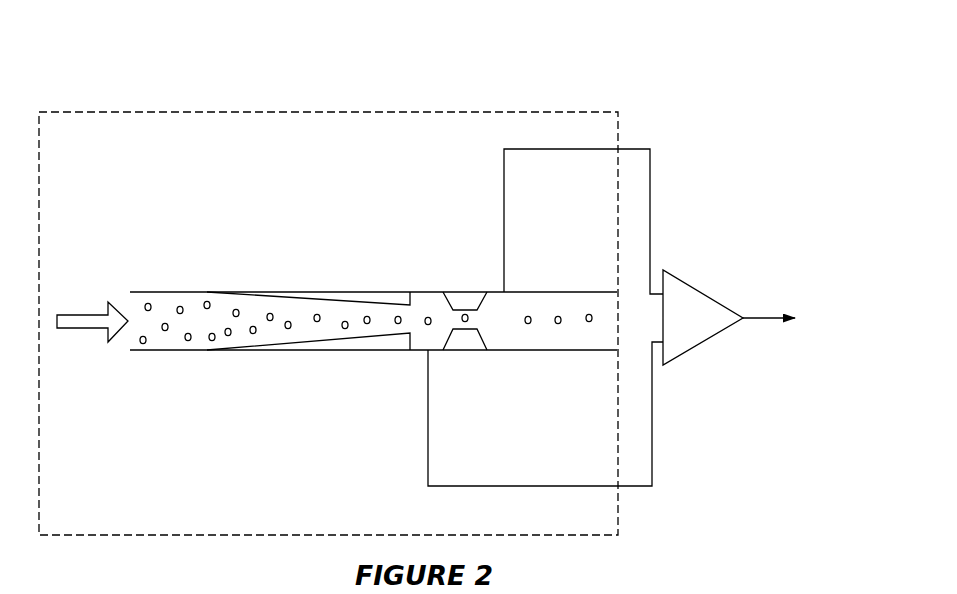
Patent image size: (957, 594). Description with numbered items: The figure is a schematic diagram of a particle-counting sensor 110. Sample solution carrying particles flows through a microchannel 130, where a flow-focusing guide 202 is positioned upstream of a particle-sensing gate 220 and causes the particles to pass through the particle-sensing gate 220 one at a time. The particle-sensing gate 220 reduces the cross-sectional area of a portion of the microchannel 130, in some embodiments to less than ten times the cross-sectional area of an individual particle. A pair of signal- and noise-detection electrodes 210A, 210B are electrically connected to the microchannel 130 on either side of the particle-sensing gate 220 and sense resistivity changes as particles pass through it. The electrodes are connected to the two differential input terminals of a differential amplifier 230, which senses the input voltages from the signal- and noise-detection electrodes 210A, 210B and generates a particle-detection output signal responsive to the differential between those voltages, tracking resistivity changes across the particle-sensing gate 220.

The particle-counting sensor 110 is at (355, 112).
The microchannel 130 is at (307, 352).
The flow-focusing guide 202 is at (380, 300).
The signal- and noise-detection electrode 210A is at (495, 235).
The signal- and noise-detection electrode 210B is at (418, 405).
The particle-sensing gate 220 is at (483, 321).
The differential amplifier 230 is at (693, 287).